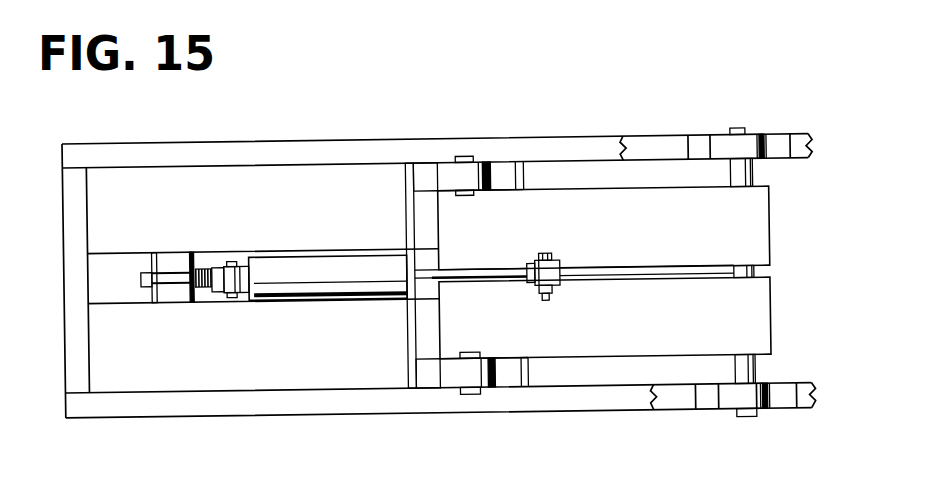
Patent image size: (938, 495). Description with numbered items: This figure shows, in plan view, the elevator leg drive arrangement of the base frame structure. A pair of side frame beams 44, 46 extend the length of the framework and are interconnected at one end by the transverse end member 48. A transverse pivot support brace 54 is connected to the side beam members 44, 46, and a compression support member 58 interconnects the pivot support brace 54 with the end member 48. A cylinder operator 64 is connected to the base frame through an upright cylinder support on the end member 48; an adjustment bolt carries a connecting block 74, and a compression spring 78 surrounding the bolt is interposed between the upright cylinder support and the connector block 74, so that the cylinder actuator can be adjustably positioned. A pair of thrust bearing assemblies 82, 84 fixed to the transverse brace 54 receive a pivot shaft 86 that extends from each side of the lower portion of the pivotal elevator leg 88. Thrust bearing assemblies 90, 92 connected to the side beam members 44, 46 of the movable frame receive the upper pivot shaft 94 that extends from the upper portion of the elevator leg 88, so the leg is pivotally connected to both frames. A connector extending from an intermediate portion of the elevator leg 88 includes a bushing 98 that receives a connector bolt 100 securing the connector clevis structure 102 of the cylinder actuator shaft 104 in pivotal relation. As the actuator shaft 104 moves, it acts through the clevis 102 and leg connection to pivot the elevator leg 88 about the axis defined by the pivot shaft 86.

The side frame beam 44 is at (657, 145).
The side frame beam 46 is at (677, 400).
The end member 48 is at (72, 212).
The transverse pivot support brace 54 is at (411, 192).
The compression support member 58 is at (118, 294).
The cylinder operator 64 is at (358, 285).
The connecting block 74 is at (216, 266).
The compression spring 78 is at (200, 288).
The thrust bearing assembly 82 is at (484, 164).
The thrust bearing assembly 84 is at (483, 395).
The pivot shaft 86 is at (470, 392).
The pivotal elevator leg 88 is at (750, 316).
The thrust bearing assembly 90 is at (754, 140).
The thrust bearing assembly 92 is at (758, 398).
The upper pivot shaft 94 is at (752, 170).
The bushing 98 is at (556, 288).
The connector bolt 100 is at (545, 302).
The connector clevis structure 102 is at (532, 292).
The cylinder actuator shaft 104 is at (505, 273).